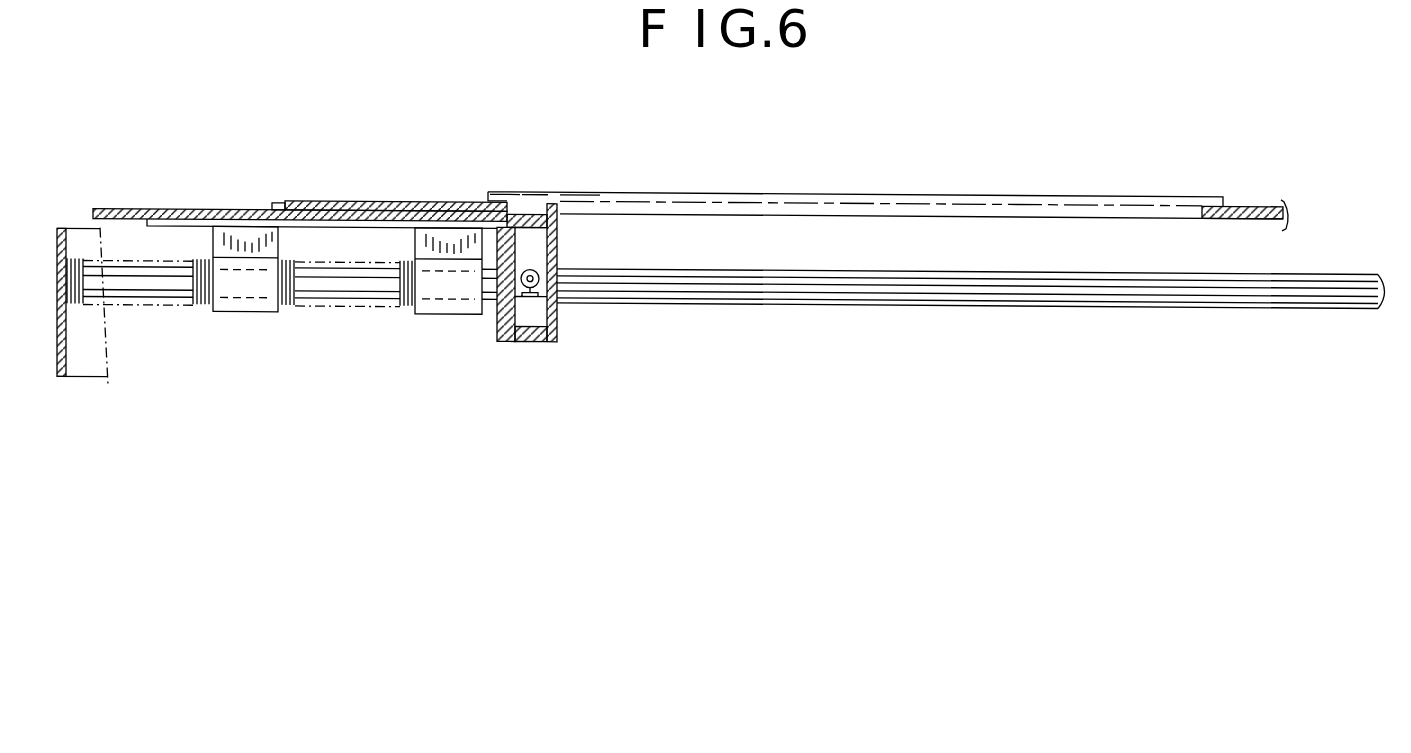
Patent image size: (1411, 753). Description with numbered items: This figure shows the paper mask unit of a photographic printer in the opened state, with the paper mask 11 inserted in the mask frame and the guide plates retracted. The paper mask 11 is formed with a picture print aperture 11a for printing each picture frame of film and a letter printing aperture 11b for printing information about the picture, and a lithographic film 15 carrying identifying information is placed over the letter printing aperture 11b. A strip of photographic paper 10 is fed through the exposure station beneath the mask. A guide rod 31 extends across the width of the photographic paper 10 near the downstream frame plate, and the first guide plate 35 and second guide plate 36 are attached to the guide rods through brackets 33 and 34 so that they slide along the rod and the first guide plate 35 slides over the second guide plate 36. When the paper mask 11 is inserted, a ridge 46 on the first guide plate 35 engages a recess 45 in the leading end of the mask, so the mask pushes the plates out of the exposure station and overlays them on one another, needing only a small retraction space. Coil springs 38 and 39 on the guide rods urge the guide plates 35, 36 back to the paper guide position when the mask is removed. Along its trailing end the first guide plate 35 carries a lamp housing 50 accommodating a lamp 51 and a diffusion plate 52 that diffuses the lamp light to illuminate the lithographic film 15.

The photographic paper 10 is at (887, 191).
The paper mask 11 is at (1247, 201).
The picture print aperture 11a is at (577, 194).
The letter printing aperture 11b is at (520, 191).
The lithographic film 15 is at (535, 191).
The guide rod 31 is at (1222, 297).
The bracket 33 is at (442, 306).
The bracket 34 is at (250, 307).
The first guide plate 35 is at (173, 211).
The second guide plate 36 is at (155, 231).
The coil spring 38 is at (198, 306).
The coil spring 39 is at (280, 307).
The recess 45 is at (325, 200).
The ridge 46 is at (303, 201).
The lamp housing 50 is at (537, 314).
The lamp 51 is at (533, 264).
The diffusion plate 52 is at (557, 233).